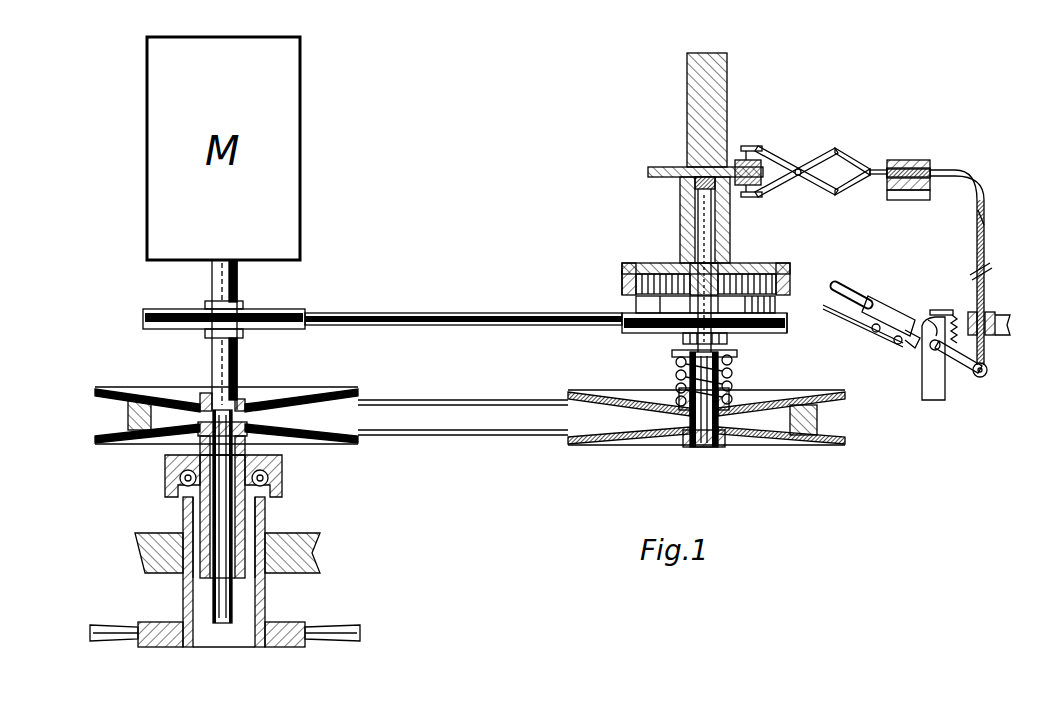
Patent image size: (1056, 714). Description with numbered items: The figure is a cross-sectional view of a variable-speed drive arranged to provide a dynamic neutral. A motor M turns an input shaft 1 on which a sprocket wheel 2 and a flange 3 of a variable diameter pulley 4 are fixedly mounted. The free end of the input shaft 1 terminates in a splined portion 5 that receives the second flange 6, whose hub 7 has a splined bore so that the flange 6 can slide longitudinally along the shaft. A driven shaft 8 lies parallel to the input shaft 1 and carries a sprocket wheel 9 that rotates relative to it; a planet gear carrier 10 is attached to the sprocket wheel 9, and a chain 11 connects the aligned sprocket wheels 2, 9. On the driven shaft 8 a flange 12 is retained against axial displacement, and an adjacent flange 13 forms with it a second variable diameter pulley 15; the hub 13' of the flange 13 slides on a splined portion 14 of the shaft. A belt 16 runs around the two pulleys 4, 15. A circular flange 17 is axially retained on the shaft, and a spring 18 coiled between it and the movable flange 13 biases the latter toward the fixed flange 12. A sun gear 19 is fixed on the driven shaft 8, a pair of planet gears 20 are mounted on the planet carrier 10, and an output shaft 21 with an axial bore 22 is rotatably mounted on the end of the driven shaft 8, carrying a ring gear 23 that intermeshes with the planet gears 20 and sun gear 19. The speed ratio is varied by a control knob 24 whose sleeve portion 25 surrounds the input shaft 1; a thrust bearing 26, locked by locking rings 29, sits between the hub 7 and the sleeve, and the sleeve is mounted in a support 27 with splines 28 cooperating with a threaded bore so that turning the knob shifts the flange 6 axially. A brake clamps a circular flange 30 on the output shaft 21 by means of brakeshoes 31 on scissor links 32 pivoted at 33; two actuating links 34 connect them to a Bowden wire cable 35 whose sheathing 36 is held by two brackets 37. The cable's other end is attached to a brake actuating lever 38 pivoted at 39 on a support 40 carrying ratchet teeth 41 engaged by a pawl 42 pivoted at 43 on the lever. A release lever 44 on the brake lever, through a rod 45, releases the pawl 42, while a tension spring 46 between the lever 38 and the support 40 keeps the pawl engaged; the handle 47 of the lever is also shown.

The input shaft 1 is at (212, 297).
The sprocket wheel 2 is at (295, 309).
The flange 3 is at (172, 387).
The variable diameter pulley 4 is at (105, 407).
The splined portion 5 is at (215, 640).
The second flange 6 is at (150, 444).
The hub 7 is at (250, 444).
The driven shaft 8 is at (697, 210).
The sprocket wheel 9 is at (750, 340).
The planet gear carrier 10 is at (640, 303).
The chain 11 is at (430, 313).
The flange 12 is at (760, 446).
The flange 13 is at (706, 381).
The hub 13' is at (683, 383).
The splined portion 14 is at (700, 450).
The variable diameter pulley 15 is at (826, 426).
The belt 16 is at (460, 410).
The circular flange 17 is at (737, 356).
The spring 18 is at (738, 380).
The sun gear 19 is at (650, 263).
The planet gears 20 is at (625, 280).
The output shaft 21 is at (727, 70).
The axial bore 22 is at (690, 170).
The ring gear 23 is at (625, 285).
The control knob 24 is at (290, 647).
The sleeve portion 25 is at (165, 485).
The thrust bearing 26 is at (265, 505).
The support 27 is at (320, 556).
The splines 28 is at (265, 520).
The locking rings 29 is at (282, 472).
The circular flange 30 is at (648, 172).
The brakeshoes 31 is at (760, 146).
The scissor links 32 is at (775, 190).
The pivot 33 is at (800, 169).
The actuating links 34 is at (858, 160).
The Bowden wire cable 35 is at (978, 215).
The sheathing 36 is at (938, 165).
The brackets 37 is at (910, 160).
The brake actuating lever 38 is at (885, 300).
The pivot 39 is at (940, 310).
The support 40 is at (922, 390).
The ratchet teeth 41 is at (915, 350).
The pawl 42 is at (898, 345).
The pivot 43 is at (878, 332).
The release lever 44 is at (802, 325).
The rod 45 is at (835, 312).
The tension spring 46 is at (975, 380).
The handle 47 is at (845, 285).